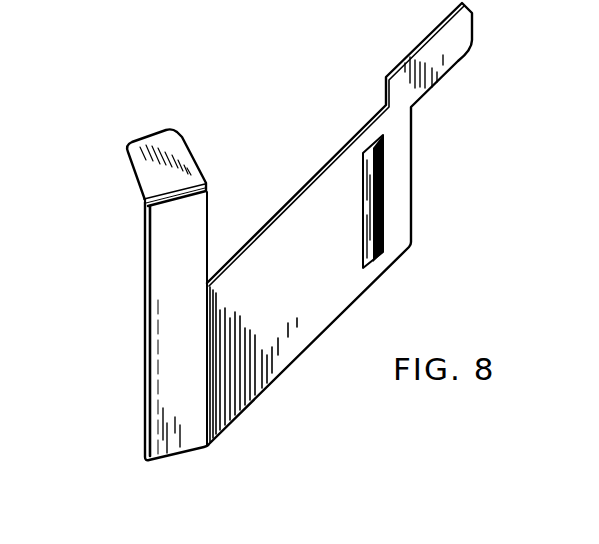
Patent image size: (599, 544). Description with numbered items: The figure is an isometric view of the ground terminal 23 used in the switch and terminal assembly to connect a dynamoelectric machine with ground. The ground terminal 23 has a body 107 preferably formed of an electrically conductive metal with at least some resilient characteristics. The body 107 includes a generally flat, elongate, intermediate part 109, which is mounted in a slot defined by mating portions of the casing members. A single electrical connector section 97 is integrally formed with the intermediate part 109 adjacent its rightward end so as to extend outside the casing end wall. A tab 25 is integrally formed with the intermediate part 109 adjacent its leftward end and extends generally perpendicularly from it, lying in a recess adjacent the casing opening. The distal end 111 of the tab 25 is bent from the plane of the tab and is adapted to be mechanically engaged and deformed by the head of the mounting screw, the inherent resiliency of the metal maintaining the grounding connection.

The ground terminal 23 is at (128, 356).
The tab 25 is at (207, 220).
The electrical connector section 97 is at (472, 30).
The body 107 is at (410, 194).
The intermediate part 109 is at (327, 292).
The distal end 111 is at (125, 166).